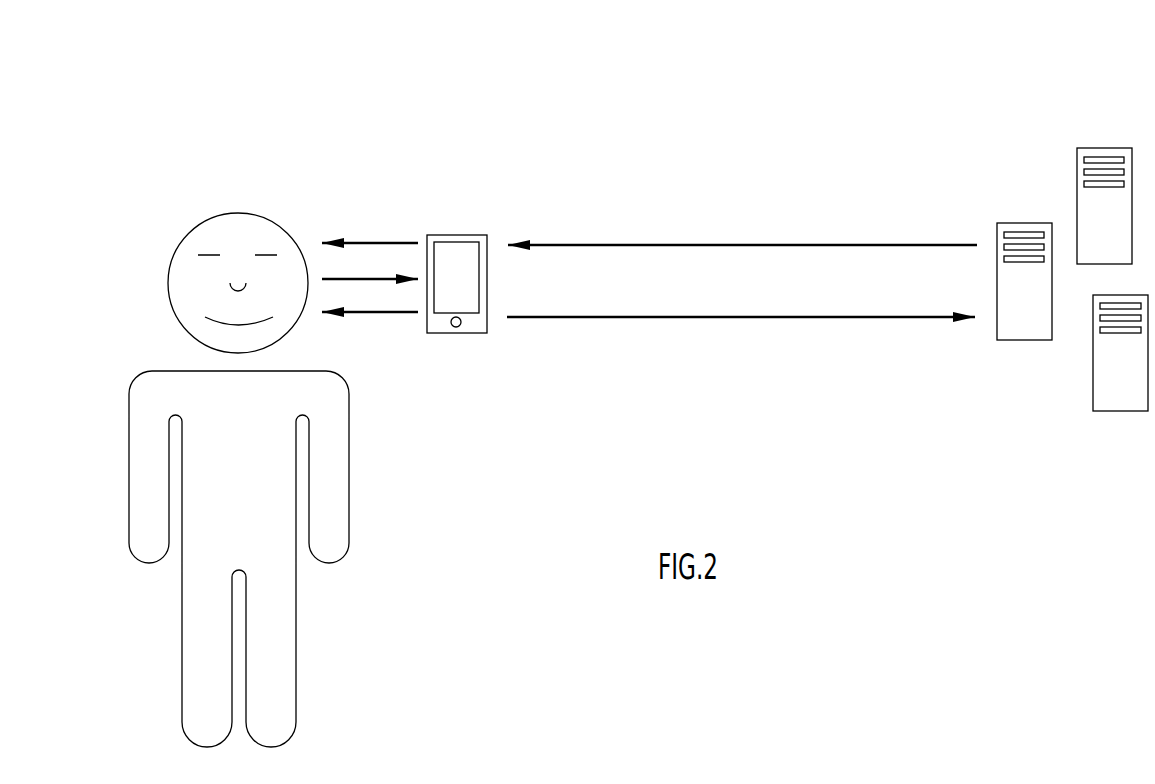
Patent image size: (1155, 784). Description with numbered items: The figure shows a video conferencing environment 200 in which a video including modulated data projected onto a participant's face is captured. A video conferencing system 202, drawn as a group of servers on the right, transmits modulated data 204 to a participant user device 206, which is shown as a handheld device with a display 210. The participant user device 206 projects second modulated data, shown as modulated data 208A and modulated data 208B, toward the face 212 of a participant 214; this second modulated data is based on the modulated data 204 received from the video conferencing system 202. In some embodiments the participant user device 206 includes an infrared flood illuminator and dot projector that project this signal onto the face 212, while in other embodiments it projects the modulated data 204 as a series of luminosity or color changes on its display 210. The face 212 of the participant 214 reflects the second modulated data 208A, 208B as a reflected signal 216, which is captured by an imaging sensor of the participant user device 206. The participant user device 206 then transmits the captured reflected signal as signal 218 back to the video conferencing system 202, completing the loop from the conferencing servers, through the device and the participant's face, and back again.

The video conferencing environment 200 is at (157, 127).
The video conferencing system 202 is at (1017, 167).
The modulated data 204 is at (700, 245).
The participant user device 206 is at (467, 297).
The modulated data 208A is at (356, 241).
The modulated data 208B is at (357, 315).
The display 210 is at (457, 296).
The face 212 is at (200, 283).
The participant 214 is at (158, 688).
The reflected signal 216 is at (376, 278).
The signal 218 is at (729, 318).